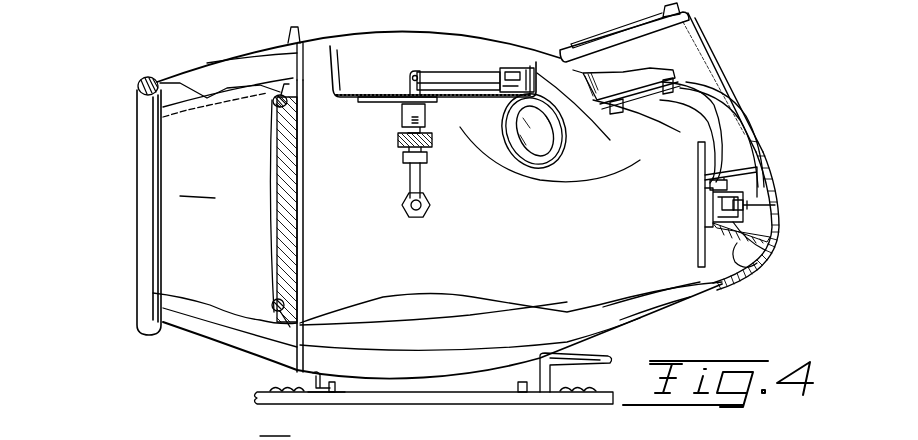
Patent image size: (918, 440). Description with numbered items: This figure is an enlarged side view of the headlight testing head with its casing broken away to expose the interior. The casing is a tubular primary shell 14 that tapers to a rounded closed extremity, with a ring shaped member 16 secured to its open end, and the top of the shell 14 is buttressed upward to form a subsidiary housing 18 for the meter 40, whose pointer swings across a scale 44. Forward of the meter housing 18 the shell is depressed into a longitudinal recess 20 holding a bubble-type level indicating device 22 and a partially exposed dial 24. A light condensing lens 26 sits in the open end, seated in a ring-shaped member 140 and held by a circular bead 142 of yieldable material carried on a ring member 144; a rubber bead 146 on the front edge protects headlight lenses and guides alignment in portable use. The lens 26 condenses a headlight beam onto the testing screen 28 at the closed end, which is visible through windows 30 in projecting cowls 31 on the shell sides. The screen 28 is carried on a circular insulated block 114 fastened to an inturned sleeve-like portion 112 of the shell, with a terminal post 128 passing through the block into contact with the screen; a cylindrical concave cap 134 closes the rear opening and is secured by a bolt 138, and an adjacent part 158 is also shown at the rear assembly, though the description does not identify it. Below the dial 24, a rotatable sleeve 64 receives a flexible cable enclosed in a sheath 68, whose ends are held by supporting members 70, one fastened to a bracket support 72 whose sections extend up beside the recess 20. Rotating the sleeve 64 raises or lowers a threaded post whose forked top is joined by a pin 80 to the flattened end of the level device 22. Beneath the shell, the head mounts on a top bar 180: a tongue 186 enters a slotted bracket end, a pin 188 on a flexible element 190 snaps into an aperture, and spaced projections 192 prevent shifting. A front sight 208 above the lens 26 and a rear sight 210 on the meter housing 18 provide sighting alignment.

The primary shell 14 is at (655, 327).
The ring shaped member 16 is at (182, 213).
The subsidiary housing 18 is at (700, 73).
The longitudinal recess 20 is at (370, 56).
The level indicating device 22 is at (465, 72).
The dial 24 is at (380, 100).
The light condensing lens 26 is at (290, 264).
The testing screen 28 is at (698, 244).
The windows 30 is at (533, 147).
The projecting cowls 31 is at (575, 165).
The meter 40 is at (613, 82).
The scale 44 is at (258, 436).
The sleeve 64 is at (427, 117).
The flexible sheath 68 is at (410, 183).
The supporting members 70 is at (403, 157).
The bracket support 72 is at (432, 142).
The pin 80 is at (425, 56).
The inturned sleeve-like portion 112 is at (745, 270).
The circular insulated block 114 is at (710, 190).
The terminal post 128 is at (770, 163).
The cylindrical concave cap 134 is at (730, 184).
The bolt 138 is at (775, 206).
The ring-shaped member 140 is at (395, 104).
The circular bead 142 is at (272, 110).
The ring member 144 is at (272, 300).
The bead 146 is at (148, 115).
The clamp 158 is at (765, 235).
The top bar 180 is at (460, 400).
The tongue 186 is at (325, 384).
The pin 188 is at (542, 366).
The flexible element 190 is at (608, 342).
The spaced projections 192 is at (336, 393).
The front sight 208 is at (290, 30).
The rear sight 210 is at (682, 8).